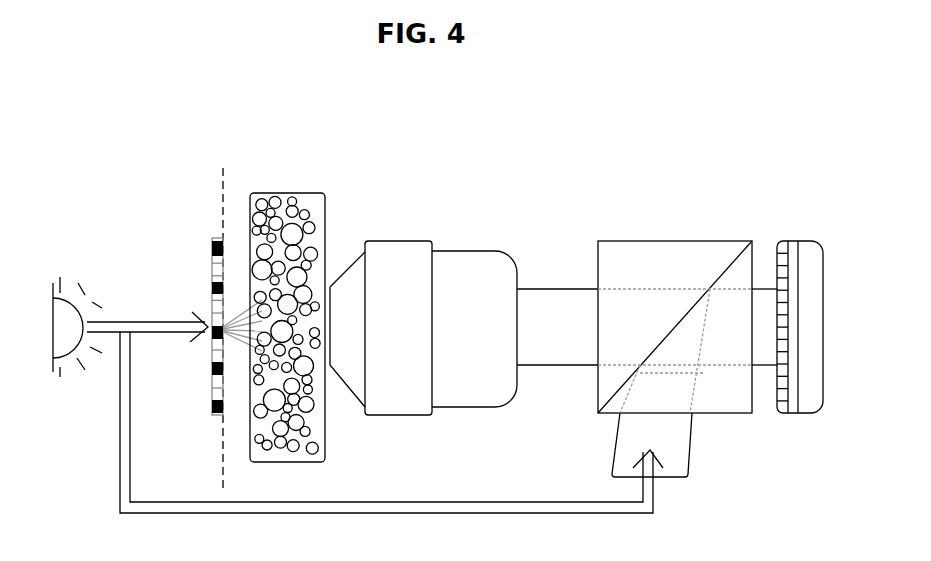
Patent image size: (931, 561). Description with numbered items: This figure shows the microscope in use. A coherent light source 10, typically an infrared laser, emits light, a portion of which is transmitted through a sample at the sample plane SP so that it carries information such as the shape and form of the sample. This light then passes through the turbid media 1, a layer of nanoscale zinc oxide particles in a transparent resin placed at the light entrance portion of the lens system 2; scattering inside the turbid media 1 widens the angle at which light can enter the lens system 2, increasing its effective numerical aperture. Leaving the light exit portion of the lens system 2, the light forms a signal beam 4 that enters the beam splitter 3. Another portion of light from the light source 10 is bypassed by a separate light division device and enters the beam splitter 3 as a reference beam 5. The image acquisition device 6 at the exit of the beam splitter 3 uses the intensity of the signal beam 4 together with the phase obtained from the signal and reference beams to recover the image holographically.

The light source 10 is at (72, 295).
The sample plane SP is at (235, 316).
The turbid media 1 is at (285, 193).
The lens system 2 is at (415, 241).
The signal beam 4 is at (553, 300).
The beam splitter 3 is at (675, 241).
The reference beam 5 is at (655, 500).
The image acquisition device 6 is at (795, 241).